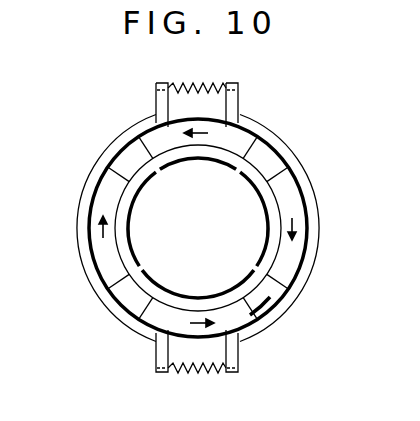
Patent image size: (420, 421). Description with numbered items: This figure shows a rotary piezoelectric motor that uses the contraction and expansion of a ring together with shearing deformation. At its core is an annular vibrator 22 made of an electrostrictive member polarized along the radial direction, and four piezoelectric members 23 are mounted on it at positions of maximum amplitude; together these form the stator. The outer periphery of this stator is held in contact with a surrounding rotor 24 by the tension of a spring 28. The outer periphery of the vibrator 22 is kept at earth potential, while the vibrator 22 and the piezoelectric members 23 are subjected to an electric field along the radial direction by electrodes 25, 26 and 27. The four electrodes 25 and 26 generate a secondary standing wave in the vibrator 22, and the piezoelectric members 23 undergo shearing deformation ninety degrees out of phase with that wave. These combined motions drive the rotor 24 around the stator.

The annular vibrator 22 is at (290, 150).
The piezoelectric members 23 is at (292, 197).
The rotor 24 is at (283, 304).
The electrodes 25 is at (198, 159).
The electrodes 26 is at (129, 224).
The electrodes 27 is at (150, 124).
The spring 28 is at (214, 370).